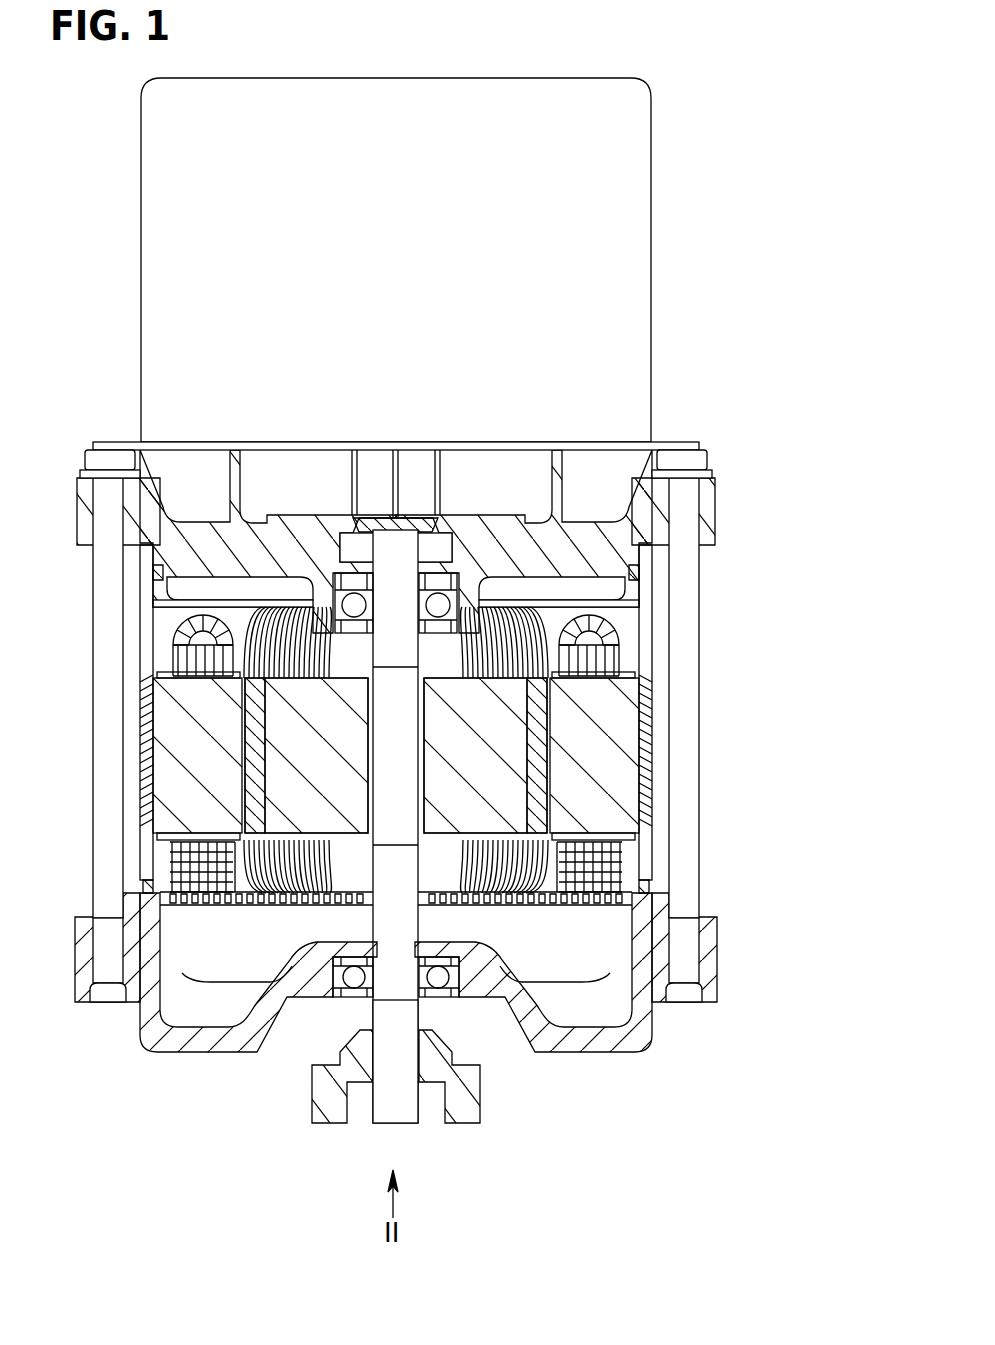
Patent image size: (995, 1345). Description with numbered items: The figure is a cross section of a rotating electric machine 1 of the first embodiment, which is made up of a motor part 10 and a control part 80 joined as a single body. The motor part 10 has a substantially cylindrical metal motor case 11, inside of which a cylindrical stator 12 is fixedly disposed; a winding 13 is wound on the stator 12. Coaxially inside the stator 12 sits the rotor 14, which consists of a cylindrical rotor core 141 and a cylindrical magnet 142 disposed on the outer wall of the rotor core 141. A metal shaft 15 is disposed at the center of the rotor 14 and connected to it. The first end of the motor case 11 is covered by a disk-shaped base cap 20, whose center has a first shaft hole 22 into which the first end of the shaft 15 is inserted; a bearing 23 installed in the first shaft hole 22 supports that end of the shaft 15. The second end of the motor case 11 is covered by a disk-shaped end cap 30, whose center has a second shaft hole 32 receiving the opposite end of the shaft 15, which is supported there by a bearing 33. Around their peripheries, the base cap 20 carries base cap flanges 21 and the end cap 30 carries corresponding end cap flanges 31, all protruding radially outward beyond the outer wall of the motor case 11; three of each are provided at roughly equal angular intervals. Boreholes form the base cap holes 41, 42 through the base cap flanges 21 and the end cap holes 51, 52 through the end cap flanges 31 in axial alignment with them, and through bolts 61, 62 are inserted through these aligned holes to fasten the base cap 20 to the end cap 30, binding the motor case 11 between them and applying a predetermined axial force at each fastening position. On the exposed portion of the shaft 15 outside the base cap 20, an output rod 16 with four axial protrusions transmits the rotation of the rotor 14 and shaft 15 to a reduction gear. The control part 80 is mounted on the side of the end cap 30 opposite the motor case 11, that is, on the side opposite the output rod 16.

The rotating electric machine 1 is at (461, 50).
The control part 80 is at (664, 246).
The motor part 10 is at (762, 703).
The motor case 11 is at (650, 692).
The stator 12 is at (628, 722).
The winding 13 is at (640, 659).
The rotor 14 is at (500, 752).
The rotor core 141 is at (515, 777).
The magnet 142 is at (545, 803).
The shaft 15 is at (410, 828).
The output rod 16 is at (340, 1112).
The base cap 20 is at (605, 1052).
The base cap flanges 21 is at (82, 961).
The first shaft hole 22 is at (383, 1000).
The bearing 23 is at (335, 978).
The end cap 30 is at (536, 530).
The end cap flanges 31 is at (84, 517).
The second shaft hole 32 is at (382, 605).
The bearing 33 is at (330, 600).
The base cap hole 41 is at (107, 975).
The base cap hole 42 is at (688, 975).
The end cap hole 51 is at (100, 508).
The end cap hole 52 is at (682, 515).
The through bolt 61 is at (97, 613).
The through bolt 62 is at (692, 590).